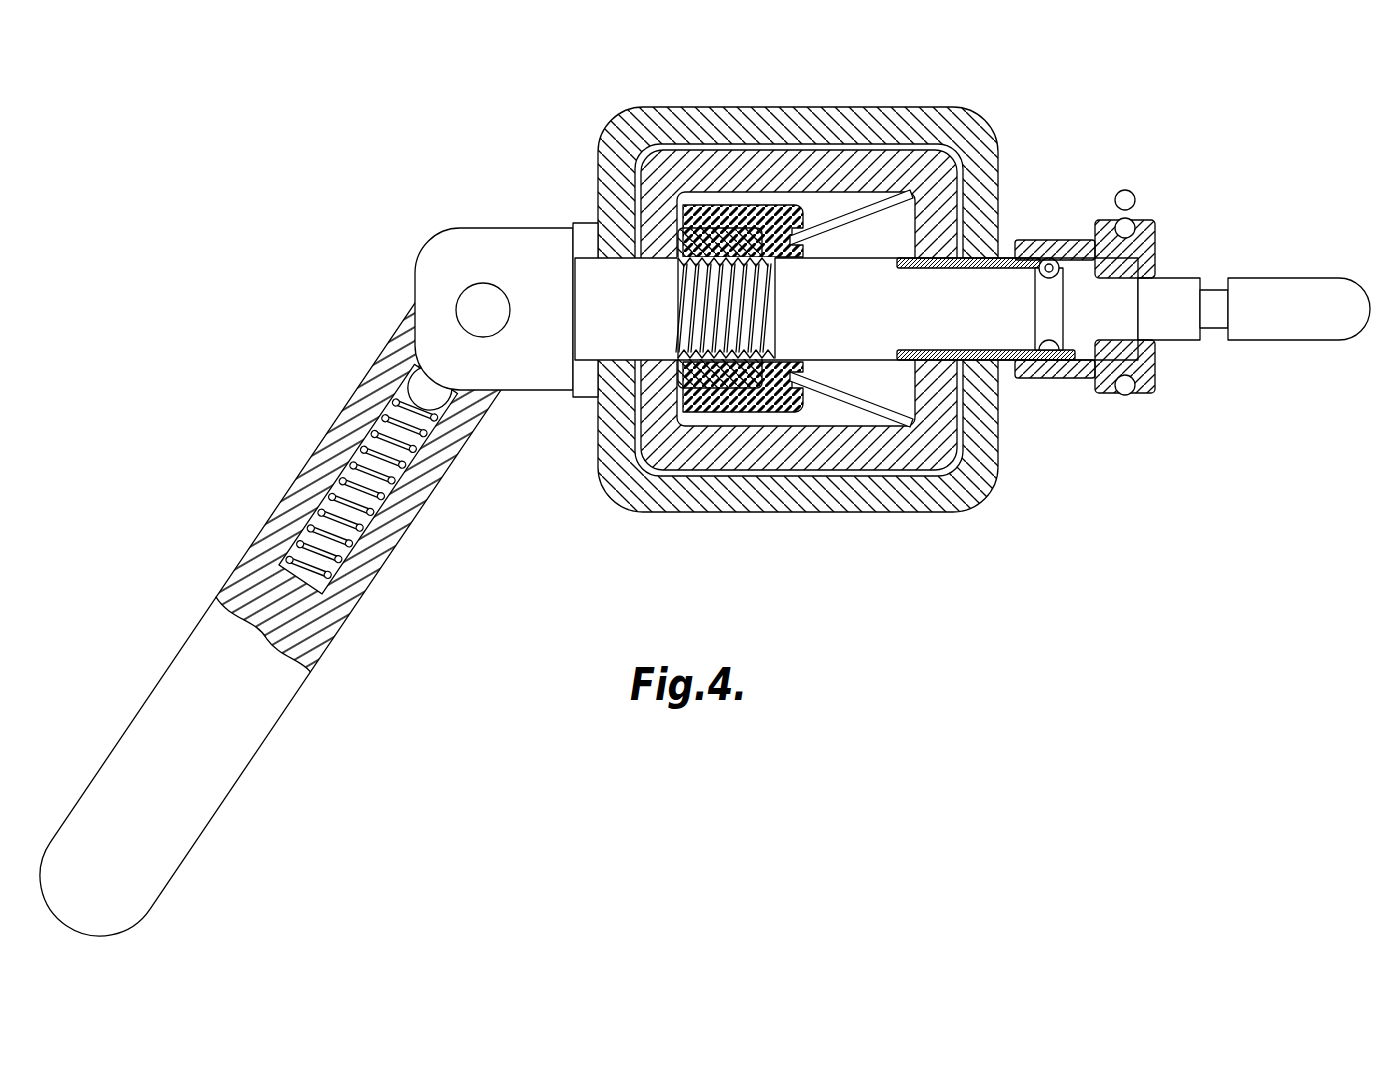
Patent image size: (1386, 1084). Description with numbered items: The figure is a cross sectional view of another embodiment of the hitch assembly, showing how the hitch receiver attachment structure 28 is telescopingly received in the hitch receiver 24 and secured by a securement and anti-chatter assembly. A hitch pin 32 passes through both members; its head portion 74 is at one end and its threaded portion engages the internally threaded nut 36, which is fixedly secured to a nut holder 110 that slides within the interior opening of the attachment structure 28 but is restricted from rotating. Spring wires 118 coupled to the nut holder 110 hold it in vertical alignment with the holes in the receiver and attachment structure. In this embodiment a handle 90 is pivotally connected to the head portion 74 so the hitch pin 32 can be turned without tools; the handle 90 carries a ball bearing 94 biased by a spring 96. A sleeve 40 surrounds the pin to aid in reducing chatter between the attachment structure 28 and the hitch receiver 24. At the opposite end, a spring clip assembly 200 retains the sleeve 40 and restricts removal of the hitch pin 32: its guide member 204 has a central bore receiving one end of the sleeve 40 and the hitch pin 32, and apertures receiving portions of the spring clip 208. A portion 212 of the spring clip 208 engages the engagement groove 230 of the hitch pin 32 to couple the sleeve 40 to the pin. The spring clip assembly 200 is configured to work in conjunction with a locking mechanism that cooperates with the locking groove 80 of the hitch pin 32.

The hitch receiver 24 is at (984, 136).
The hitch receiver attachment structure 28 is at (725, 458).
The hitch pin 32 is at (627, 266).
The nut 36 is at (677, 240).
The sleeve 40 is at (1004, 258).
The head portion 74 is at (478, 232).
The locking groove 80 is at (1210, 287).
The handle 90 is at (195, 653).
The ball bearing 94 is at (417, 381).
The spring 96 is at (353, 483).
The nut holder 110 is at (744, 212).
The spring wires 118 is at (862, 408).
The spring clip assembly 200 is at (1147, 211).
The guide member 204 is at (1043, 378).
The spring clip 208 is at (1047, 242).
The portion of the spring clip 212 is at (1048, 258).
The engagement groove 230 is at (1058, 312).